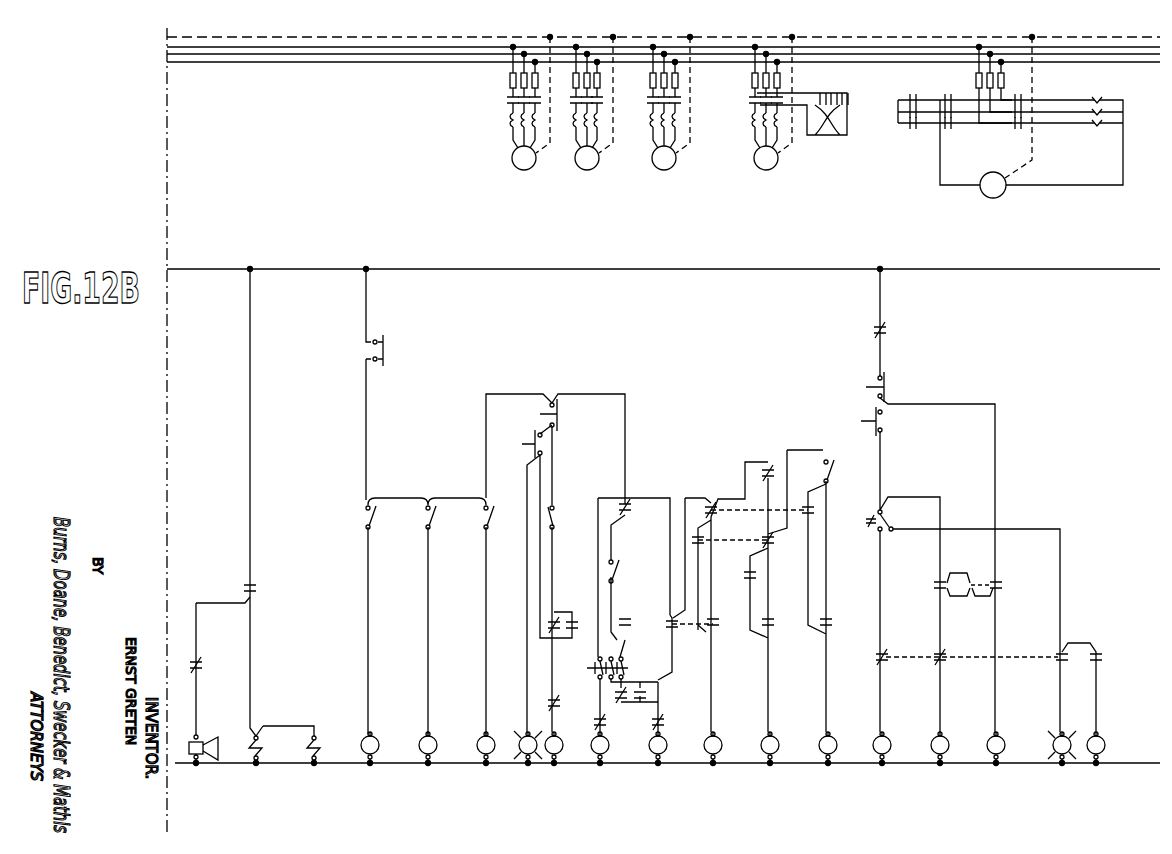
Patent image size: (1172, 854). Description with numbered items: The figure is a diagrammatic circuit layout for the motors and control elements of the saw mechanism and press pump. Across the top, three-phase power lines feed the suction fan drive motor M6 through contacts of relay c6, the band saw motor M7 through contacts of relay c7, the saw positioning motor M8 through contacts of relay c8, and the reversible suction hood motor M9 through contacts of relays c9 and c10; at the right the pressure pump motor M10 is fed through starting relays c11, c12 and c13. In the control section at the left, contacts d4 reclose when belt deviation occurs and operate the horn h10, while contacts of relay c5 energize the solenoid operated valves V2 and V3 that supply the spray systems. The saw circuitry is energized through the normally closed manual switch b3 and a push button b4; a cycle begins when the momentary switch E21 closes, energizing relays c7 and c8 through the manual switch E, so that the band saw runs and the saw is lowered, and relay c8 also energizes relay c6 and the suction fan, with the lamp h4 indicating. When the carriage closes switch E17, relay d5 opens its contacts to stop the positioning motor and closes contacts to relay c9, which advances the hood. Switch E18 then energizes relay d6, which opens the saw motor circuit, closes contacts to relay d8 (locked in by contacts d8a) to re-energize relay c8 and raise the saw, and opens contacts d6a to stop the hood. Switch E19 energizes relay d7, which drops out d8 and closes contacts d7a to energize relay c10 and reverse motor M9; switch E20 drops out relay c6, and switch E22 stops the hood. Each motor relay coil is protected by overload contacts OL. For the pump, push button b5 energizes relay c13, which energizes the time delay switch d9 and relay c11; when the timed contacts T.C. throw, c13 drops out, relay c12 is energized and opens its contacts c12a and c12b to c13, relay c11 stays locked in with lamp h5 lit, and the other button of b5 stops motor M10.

The suction fan drive motor M6 is at (531, 103).
The band saw motor M7 is at (594, 103).
The saw positioning motor M8 is at (671, 103).
The reversible suction hood motor M9 is at (773, 103).
The pressure pump motor M10 is at (1010, 117).
The belt drive relay c5 is at (256, 600).
The suction fan relay c6 is at (510, 104).
The band saw relay c7 is at (573, 104).
The saw positioning relay c8 is at (650, 104).
The hood advance relay c9 is at (749, 104).
The hood return relay c10 is at (846, 99).
The pump motor run relay c11 is at (1024, 130).
The pump motor starting relay c12 is at (946, 130).
The normally closed contacts of relay c12 c12a is at (944, 662).
The contacts of relay c12 c12b is at (1060, 665).
The pump motor starting relay c13 is at (898, 130).
The belt deviation relay contacts d4 is at (203, 682).
The saw position relay d5 is at (380, 748).
The hood traverse relay d6 is at (438, 748).
The normally closed contacts of relay d6 d6a is at (778, 546).
The saw upper limit relay d7 is at (708, 512).
The normally open contacts of relay d7 d7a is at (815, 512).
The saw raise relay d8 is at (642, 688).
The locking contacts of relay d8 d8a is at (721, 626).
The time delay switch d9 is at (874, 527).
The manual saw switch E is at (590, 665).
The saw lowered limit switch E17 is at (366, 519).
The hood traversed limit switch E18 is at (425, 524).
The saw upper limit switch E19 is at (483, 524).
The hood approach switch E20 is at (556, 527).
The cycle initiating switch E21 is at (614, 577).
The hood terminal switch E22 is at (826, 476).
The manual saw circuit switch b3 is at (380, 353).
The manual control switch b4 is at (534, 428).
The pump motor starting switch b5 is at (866, 404).
The signal lamp h4 is at (518, 737).
The signal lamp h5 is at (1052, 739).
The horn h10 is at (200, 760).
The solenoid operated valve V2 is at (267, 751).
The solenoid operated valve V3 is at (325, 751).
The overload relay contacts OL is at (906, 330).
The timed contacts of delay switch d9 T.C. is at (900, 519).